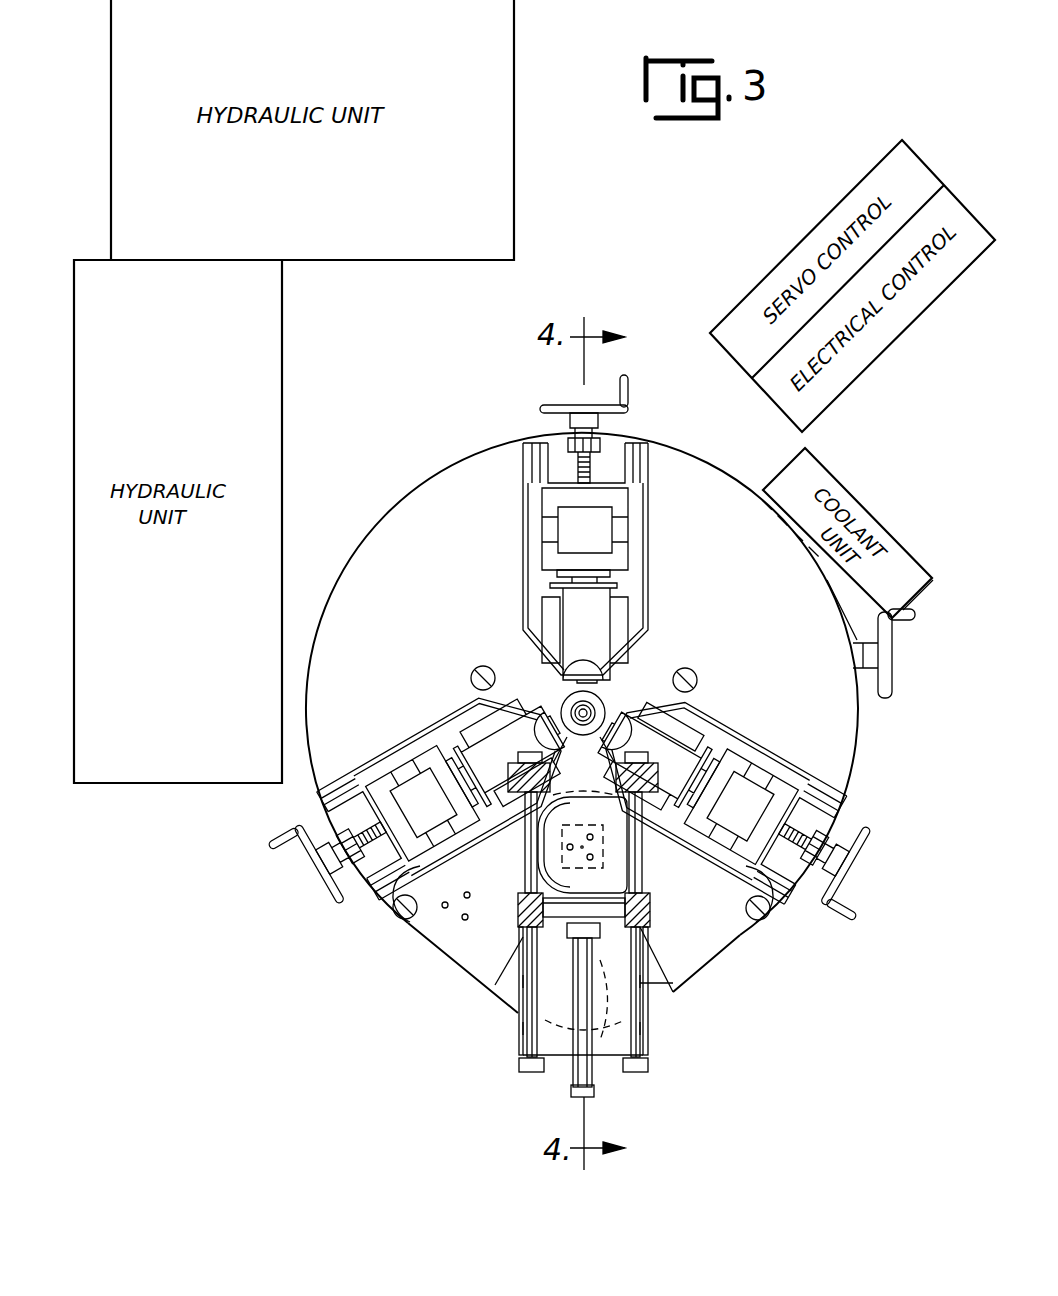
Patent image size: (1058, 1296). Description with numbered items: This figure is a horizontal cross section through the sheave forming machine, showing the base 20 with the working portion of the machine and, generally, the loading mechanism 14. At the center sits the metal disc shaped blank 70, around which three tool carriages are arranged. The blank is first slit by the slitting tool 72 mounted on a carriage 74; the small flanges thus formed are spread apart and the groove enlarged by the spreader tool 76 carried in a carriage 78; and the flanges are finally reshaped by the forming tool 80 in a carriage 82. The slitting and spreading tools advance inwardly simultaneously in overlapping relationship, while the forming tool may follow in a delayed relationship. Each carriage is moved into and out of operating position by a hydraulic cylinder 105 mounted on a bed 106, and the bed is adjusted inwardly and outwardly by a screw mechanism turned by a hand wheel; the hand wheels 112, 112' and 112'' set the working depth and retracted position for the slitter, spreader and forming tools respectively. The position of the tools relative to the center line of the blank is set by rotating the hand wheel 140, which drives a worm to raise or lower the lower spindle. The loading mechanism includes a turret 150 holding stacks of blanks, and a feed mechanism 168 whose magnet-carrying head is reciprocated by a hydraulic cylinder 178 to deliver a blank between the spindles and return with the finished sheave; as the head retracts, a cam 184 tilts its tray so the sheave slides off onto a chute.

The loading mechanism 14 is at (472, 956).
The base 20 is at (397, 523).
The metal disc shaped blank 70 is at (613, 696).
The slitting tool 72 is at (556, 705).
The carriage 74 is at (450, 733).
The spreader tool 76 is at (565, 683).
The carriage 78 is at (633, 588).
The forming tool 80 is at (583, 815).
The carriage 82 is at (707, 735).
The hydraulic cylinder 105 is at (599, 542).
The bed 106 is at (390, 757).
The hand wheel 112 is at (330, 854).
The hand wheel 112' is at (546, 429).
The hand wheel 112'' is at (851, 856).
The hand wheel 140 is at (892, 678).
The turret 150 is at (512, 1012).
The feed mechanism 168 is at (516, 924).
The hydraulic cylinder 178 is at (589, 1072).
The cam 184 is at (702, 962).